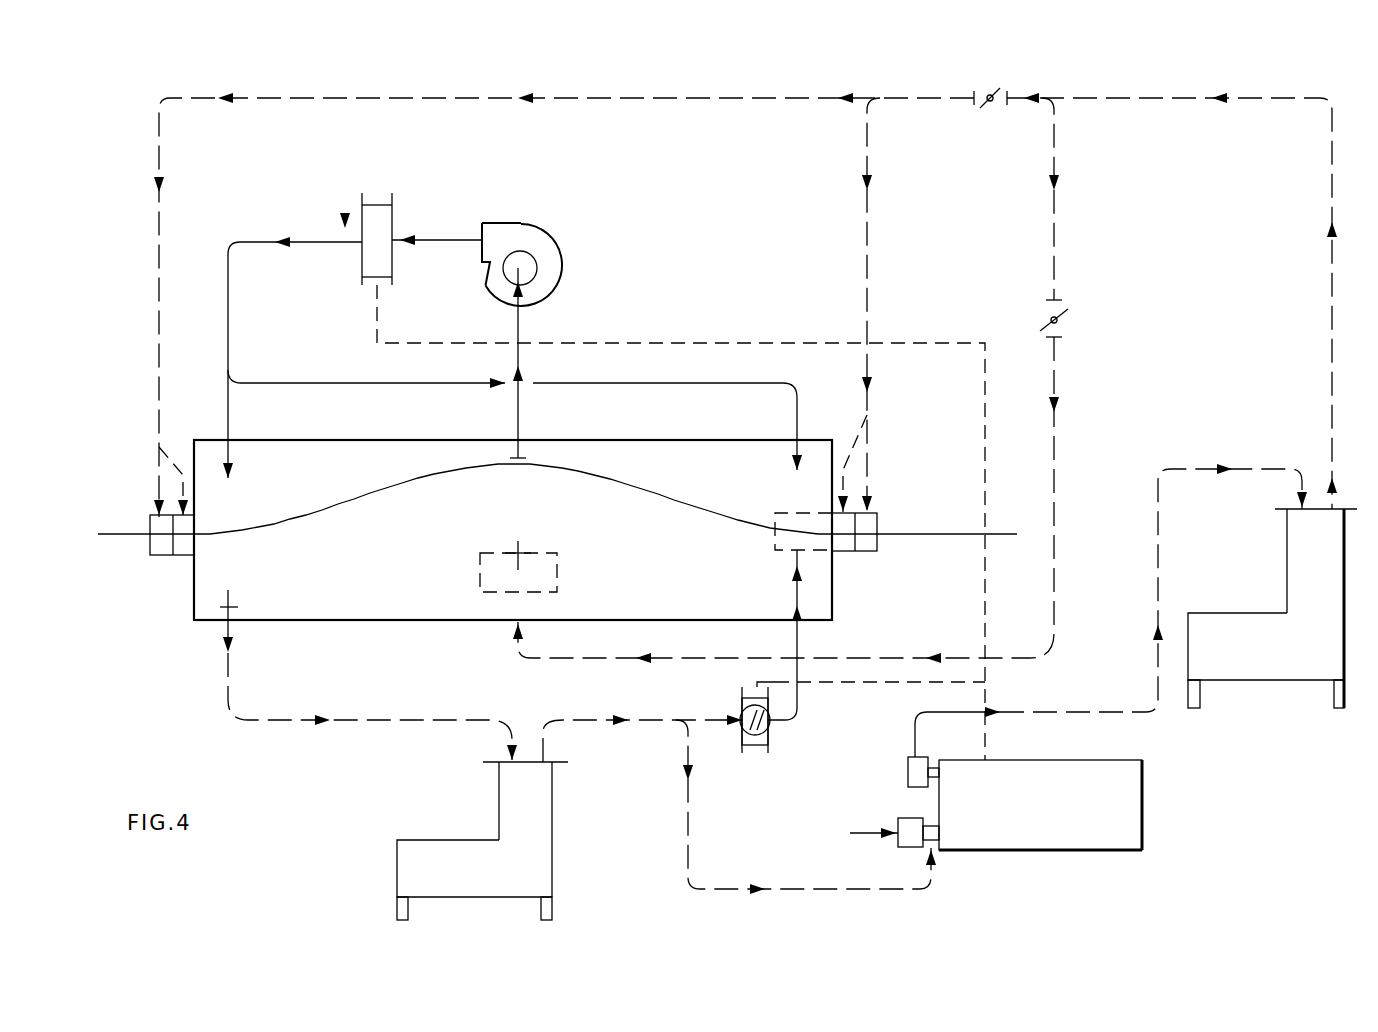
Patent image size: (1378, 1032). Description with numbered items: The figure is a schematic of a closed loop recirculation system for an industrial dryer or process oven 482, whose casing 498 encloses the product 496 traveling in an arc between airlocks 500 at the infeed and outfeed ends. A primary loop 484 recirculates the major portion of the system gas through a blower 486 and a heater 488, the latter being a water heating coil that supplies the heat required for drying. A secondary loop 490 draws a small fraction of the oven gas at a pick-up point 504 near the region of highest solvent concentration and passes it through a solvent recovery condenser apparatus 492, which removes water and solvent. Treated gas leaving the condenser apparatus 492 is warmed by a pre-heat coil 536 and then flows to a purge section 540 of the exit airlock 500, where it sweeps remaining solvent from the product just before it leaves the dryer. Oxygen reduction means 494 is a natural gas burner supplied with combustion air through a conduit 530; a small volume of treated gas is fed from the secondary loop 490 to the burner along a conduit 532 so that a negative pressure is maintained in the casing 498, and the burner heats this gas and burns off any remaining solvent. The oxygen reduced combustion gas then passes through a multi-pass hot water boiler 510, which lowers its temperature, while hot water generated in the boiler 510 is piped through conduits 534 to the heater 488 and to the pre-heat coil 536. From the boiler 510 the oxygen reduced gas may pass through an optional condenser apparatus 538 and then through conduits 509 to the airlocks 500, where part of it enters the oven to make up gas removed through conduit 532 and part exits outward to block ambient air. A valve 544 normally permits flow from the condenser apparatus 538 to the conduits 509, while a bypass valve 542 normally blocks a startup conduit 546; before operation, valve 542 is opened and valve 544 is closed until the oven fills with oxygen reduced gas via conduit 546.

The dryer or process oven 482 is at (630, 448).
The primary loop 484 is at (228, 320).
The blower 486 is at (548, 248).
The heater 488 is at (388, 225).
The secondary loop 490 is at (228, 696).
The condenser apparatus 492 is at (397, 866).
The oxygen reduction means 494 is at (900, 847).
The product 496 is at (372, 493).
The casing 498 is at (412, 440).
The airlocks 500 is at (150, 517).
The pick-up point 504 is at (232, 607).
The conduits 509 is at (927, 100).
The multi-pass hot water boiler 510 is at (1047, 850).
The conduit 530 is at (850, 833).
The conduit 532 is at (688, 840).
The conduits 534 is at (985, 605).
The pre-heat coil 536 is at (770, 742).
The condenser apparatus 538 is at (1252, 632).
The purge section 540 is at (775, 548).
The bypass valve 542 is at (1062, 316).
The valve 544 is at (990, 86).
The startup conduit 546 is at (1054, 466).